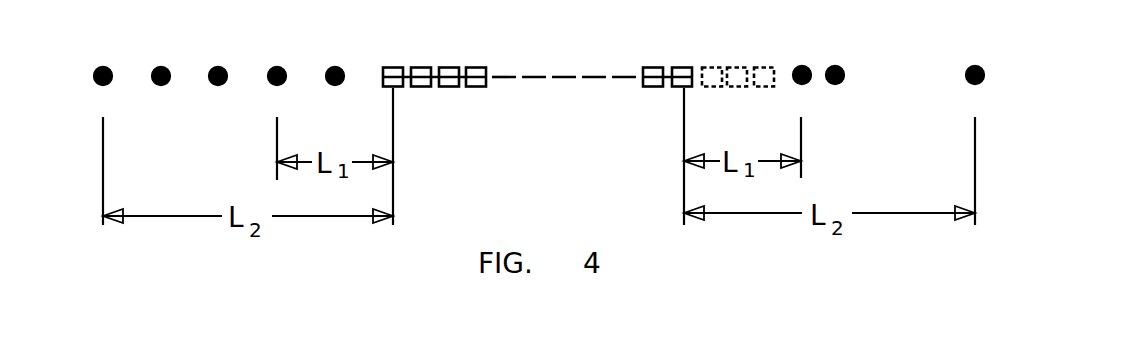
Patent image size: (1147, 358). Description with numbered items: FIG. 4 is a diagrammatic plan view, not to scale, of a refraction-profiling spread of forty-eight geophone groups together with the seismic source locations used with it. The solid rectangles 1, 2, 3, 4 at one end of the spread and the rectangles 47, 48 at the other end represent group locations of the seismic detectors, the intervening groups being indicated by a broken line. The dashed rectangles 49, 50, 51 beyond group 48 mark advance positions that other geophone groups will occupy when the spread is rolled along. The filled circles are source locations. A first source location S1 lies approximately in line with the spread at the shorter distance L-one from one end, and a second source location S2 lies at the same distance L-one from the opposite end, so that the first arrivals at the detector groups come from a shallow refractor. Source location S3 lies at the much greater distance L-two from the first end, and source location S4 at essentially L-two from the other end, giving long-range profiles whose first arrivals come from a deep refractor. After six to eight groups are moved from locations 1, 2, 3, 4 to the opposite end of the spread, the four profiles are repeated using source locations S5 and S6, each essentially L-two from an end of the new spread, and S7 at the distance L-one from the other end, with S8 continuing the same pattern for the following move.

The geophone group location 1 is at (393, 60).
The geophone group location 2 is at (421, 60).
The geophone group location 3 is at (449, 60).
The geophone group location 4 is at (476, 60).
The geophone group location 47 is at (655, 59).
The geophone group location 48 is at (683, 67).
The virtual transducer element 49 is at (713, 59).
The virtual transducer element 50 is at (743, 67).
The virtual transducer element 51 is at (767, 59).
The first source location S1 is at (275, 94).
The second source location S2 is at (796, 93).
The third source location S3 is at (103, 94).
The fourth source location S4 is at (973, 93).
The source location after roll-along S5 is at (333, 94).
The source location after roll-along S6 is at (161, 94).
The source location after roll-along S7 is at (842, 93).
The sensor position S8 is at (218, 94).